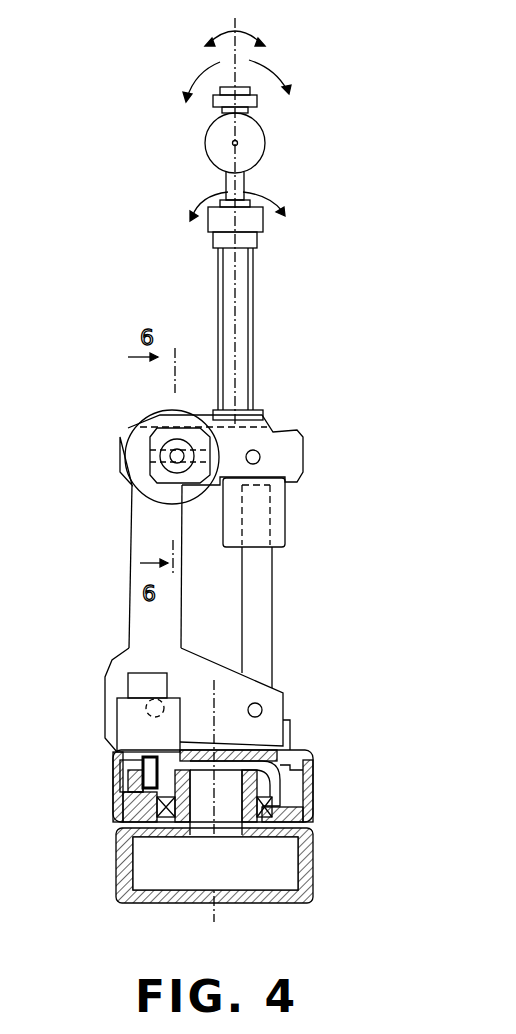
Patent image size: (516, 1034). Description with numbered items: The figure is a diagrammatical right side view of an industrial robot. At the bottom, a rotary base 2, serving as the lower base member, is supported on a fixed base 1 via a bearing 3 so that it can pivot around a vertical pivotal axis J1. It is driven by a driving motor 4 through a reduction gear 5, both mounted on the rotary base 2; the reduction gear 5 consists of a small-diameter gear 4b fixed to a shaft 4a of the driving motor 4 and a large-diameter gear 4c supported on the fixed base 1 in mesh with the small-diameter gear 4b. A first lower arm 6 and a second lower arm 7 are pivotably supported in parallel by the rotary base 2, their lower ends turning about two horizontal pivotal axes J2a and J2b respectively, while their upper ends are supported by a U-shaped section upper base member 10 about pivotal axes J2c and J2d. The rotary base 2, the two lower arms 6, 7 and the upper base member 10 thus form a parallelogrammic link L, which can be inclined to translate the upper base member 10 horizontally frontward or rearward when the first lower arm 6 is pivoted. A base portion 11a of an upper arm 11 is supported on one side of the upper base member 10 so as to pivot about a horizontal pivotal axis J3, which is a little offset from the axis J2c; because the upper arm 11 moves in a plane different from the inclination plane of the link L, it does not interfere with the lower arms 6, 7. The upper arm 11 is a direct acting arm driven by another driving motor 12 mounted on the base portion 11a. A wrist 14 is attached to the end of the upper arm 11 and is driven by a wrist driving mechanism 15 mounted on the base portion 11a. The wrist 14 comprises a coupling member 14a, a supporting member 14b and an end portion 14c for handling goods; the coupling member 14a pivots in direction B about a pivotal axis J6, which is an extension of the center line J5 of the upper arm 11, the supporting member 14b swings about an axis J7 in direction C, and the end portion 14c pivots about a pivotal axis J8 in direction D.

The fixed base 1 is at (313, 868).
The rotary base 2 is at (290, 730).
The bearing 3 is at (298, 805).
The driving motor 4 is at (123, 723).
The shaft 4a is at (115, 757).
The small-diameter gear 4b is at (120, 790).
The large-diameter gear 4c is at (122, 815).
The reduction gear 5 is at (86, 812).
The first lower arm 6 is at (128, 610).
The second lower arm 7 is at (272, 583).
The upper base member 10 is at (303, 470).
The upper arm 11 is at (253, 302).
The base portion 11a is at (263, 418).
The driving motor 12 is at (133, 498).
The wrist 14 is at (325, 143).
The coupling member 14a is at (289, 188).
The supporting member 14b is at (266, 147).
The end portion 14c is at (257, 100).
The wrist driving mechanism 15 is at (285, 528).
The pivotal axis J1 is at (216, 906).
The horizontal pivotal axis J2a is at (120, 695).
The horizontal pivotal axis J2b is at (262, 710).
The pivotal axis J2c is at (200, 456).
The pivotal axis J2d is at (260, 457).
The pivotal axis J3 is at (164, 440).
The center line J5 is at (238, 267).
The pivotal axis J6 is at (224, 183).
The axis J7 is at (207, 143).
The pivotal axis J8 is at (233, 23).
The arrow B is at (196, 212).
The arrow C is at (186, 92).
The arrow D is at (266, 38).
The parallelogrammic link L is at (282, 620).